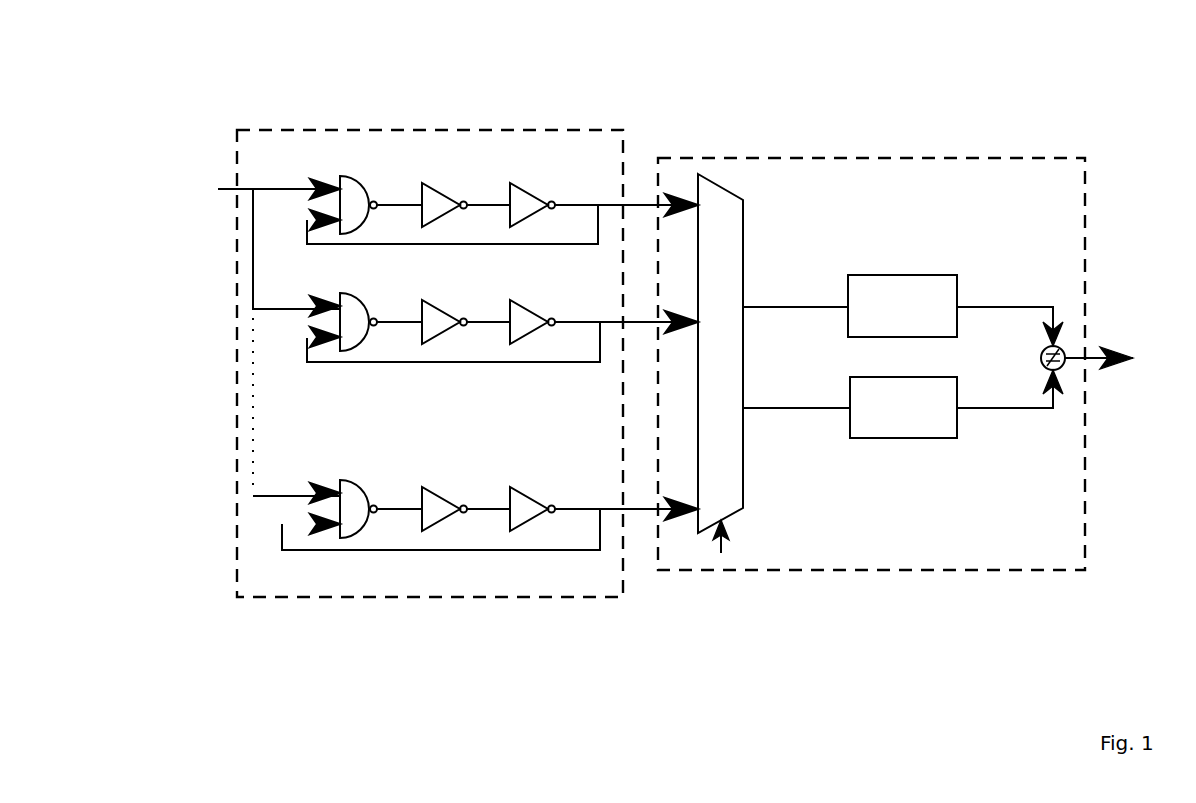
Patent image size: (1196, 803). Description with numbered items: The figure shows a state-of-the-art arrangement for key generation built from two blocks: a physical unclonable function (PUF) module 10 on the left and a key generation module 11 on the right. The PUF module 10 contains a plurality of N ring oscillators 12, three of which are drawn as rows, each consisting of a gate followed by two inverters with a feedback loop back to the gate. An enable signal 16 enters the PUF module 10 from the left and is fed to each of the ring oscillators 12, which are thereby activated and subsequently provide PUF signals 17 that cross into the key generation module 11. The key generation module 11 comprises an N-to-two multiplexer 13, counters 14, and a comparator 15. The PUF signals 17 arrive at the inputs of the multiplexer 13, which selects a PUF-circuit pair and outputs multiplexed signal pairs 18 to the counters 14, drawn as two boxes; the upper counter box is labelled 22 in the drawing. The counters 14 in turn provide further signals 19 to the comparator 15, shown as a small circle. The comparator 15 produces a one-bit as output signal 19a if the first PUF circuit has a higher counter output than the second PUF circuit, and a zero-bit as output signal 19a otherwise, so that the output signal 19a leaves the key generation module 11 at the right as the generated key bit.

The physical unclonable function (PUF) module 10 is at (541, 130).
The key generation module 11 is at (968, 157).
The ring oscillator 12 is at (397, 196).
The N-to-2 multiplexer 13 is at (723, 475).
The counter 14 is at (885, 438).
The comparator 15 is at (1040, 358).
The enable signal 16 is at (260, 337).
The PUF signal 17 is at (634, 203).
The multiplexed signal pair 18 is at (802, 307).
The further signal 19 is at (985, 306).
The output signal 19a is at (1100, 353).
The reference counter 22 is at (917, 292).